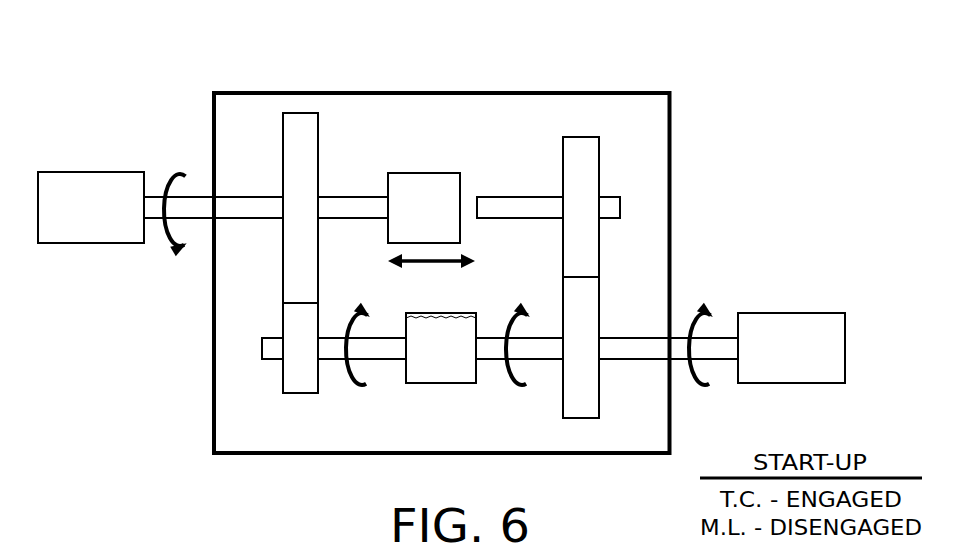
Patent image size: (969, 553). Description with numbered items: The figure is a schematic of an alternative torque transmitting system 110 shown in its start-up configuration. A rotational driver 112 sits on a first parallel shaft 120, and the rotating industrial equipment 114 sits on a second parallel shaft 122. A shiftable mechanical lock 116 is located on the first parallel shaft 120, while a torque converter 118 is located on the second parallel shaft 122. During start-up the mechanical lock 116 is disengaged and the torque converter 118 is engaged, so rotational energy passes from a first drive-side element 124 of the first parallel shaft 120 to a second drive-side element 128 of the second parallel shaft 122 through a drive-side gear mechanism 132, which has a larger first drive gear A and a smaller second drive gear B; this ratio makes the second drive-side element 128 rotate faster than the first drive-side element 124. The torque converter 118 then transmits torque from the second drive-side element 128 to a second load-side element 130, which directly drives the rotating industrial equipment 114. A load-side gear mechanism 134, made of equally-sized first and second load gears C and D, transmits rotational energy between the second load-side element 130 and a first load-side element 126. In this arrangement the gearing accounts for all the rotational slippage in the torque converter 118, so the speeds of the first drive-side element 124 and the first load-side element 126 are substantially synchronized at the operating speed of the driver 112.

The torque transmitting system 110 is at (653, 55).
The rotational driver 112 is at (118, 172).
The rotating industrial equipment 114 is at (820, 313).
The shiftable mechanical lock 116 is at (433, 173).
The torque converter 118 is at (428, 383).
The first parallel shaft 120 is at (238, 182).
The second parallel shaft 122 is at (270, 373).
The first drive-side element 124 is at (353, 197).
The first load-side element 126 is at (511, 197).
The second drive-side element 128 is at (378, 377).
The second load-side element 130 is at (540, 377).
The drive-side gear mechanism 132 is at (302, 97).
The load-side gear mechanism 134 is at (581, 120).